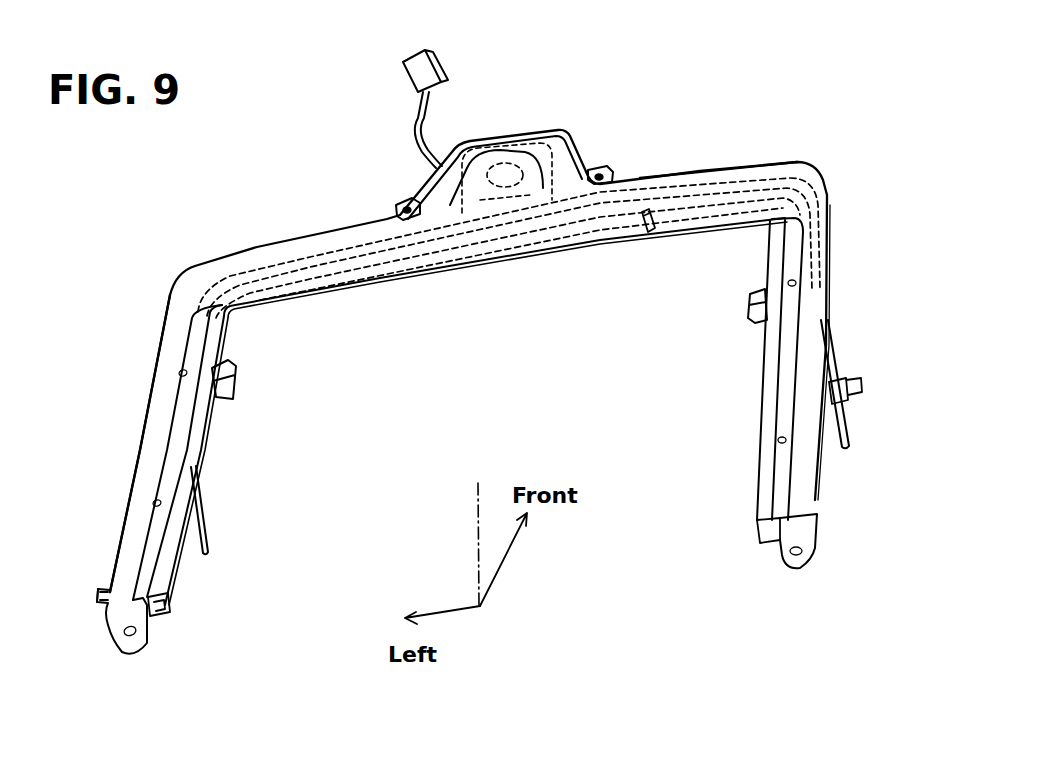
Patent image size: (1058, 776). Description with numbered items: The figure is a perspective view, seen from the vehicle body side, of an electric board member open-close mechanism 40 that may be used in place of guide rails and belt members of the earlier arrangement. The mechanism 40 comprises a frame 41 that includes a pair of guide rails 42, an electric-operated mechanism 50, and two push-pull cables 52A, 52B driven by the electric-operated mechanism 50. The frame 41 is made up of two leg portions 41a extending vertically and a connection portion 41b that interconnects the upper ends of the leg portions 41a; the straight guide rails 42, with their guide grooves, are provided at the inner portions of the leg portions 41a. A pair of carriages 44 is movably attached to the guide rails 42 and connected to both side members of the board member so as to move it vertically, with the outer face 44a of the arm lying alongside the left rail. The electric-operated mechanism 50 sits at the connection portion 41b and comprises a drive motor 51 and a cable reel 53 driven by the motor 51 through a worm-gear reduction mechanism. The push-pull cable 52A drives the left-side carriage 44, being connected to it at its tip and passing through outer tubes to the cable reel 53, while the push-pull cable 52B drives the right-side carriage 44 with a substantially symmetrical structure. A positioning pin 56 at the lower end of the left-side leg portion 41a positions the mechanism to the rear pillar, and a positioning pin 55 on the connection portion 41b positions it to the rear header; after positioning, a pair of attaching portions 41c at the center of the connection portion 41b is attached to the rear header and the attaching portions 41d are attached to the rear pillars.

The electric board member open-close mechanism 40 is at (832, 112).
The frame 41 is at (256, 247).
The leg portion 41a is at (807, 283).
The connection portion 41b is at (756, 163).
The attaching portion 41c is at (407, 200).
The attaching portion 41d is at (134, 652).
The guide rail 42 is at (150, 523).
The carriage 44 is at (223, 399).
The outer face of arm 44a is at (150, 378).
The electric-operated mechanism 50 is at (534, 127).
The drive motor 51 is at (571, 129).
The push-pull cable 52A is at (837, 347).
The push-pull cable 52B is at (206, 518).
The cable reel 53 is at (490, 214).
The positioning pin 55 is at (646, 233).
The positioning pin 56 is at (97, 600).